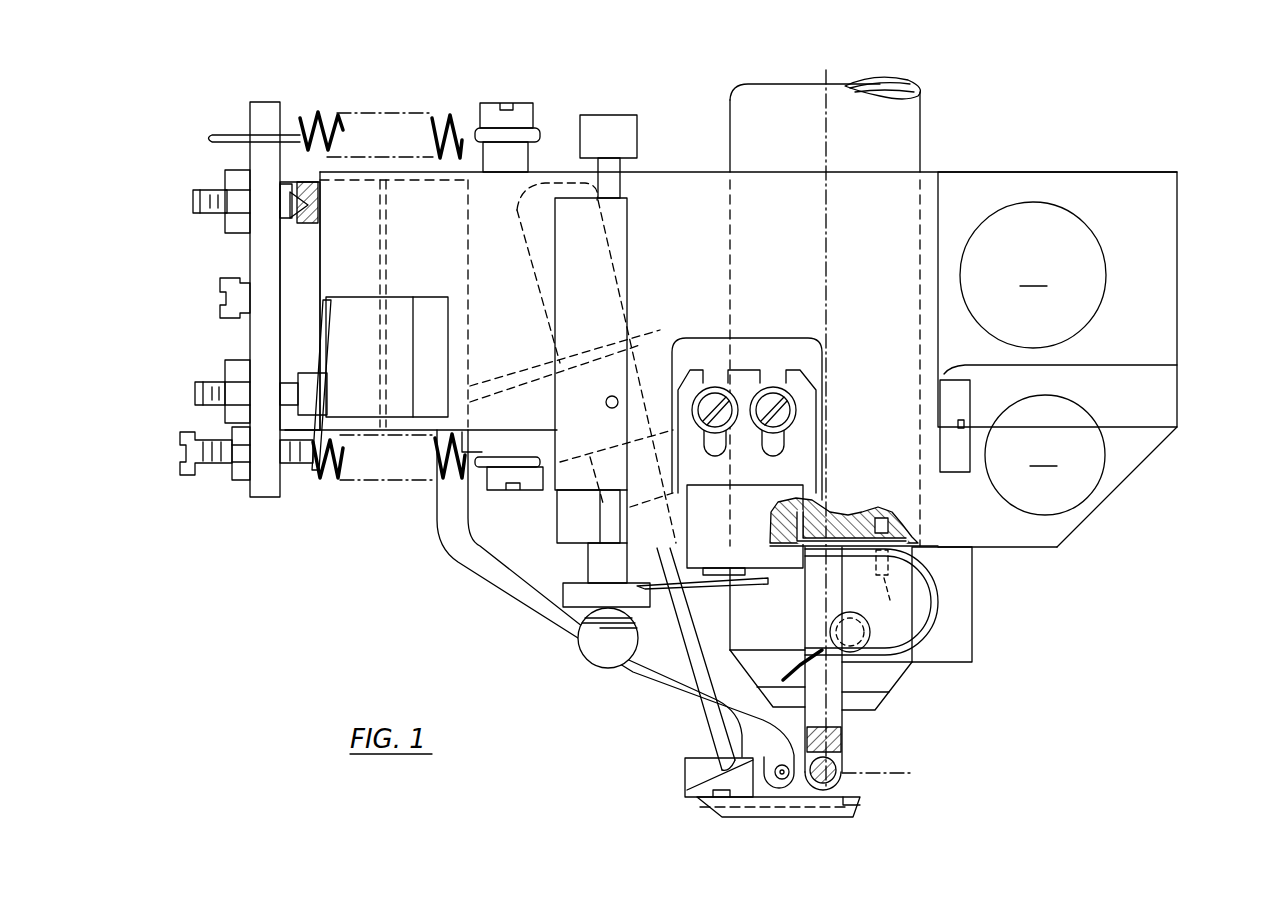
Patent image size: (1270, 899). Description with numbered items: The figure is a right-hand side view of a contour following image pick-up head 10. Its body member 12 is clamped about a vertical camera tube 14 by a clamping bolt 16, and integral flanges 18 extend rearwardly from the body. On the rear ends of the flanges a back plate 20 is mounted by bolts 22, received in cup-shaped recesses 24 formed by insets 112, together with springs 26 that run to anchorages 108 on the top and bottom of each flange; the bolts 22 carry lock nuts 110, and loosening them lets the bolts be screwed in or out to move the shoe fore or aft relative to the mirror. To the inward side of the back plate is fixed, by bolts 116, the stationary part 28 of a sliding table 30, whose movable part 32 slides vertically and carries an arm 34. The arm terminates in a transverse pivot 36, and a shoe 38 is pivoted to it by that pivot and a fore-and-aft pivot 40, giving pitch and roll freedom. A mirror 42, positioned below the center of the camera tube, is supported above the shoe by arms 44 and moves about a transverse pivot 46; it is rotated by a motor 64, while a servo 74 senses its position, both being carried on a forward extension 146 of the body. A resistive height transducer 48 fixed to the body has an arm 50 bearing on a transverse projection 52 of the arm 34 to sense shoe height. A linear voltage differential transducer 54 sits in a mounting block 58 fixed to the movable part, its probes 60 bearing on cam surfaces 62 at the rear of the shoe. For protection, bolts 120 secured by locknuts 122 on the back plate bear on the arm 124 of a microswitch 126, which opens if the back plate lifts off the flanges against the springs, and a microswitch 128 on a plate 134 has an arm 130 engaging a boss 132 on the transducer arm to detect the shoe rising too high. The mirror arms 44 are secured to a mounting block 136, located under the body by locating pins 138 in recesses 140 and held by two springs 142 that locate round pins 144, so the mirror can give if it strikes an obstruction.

The head 10 is at (678, 140).
The body member 12 is at (695, 180).
The camera tube 14 is at (920, 132).
The clamping bolt 16 is at (955, 472).
The flanges 18 is at (535, 182).
The back plate 20 is at (262, 246).
The bolts 22 is at (193, 201).
The cup-shaped recesses 24 is at (312, 228).
The springs 26 is at (345, 130).
The stationary part 28 is at (290, 318).
The sliding table 30 is at (388, 172).
The movable part 32 is at (458, 205).
The arm 34 is at (458, 550).
The transverse pivot 36 is at (784, 780).
The shoe 38 is at (845, 812).
The fore-and-aft pivot 40 is at (772, 780).
The mirror 42 is at (840, 778).
The arms 44 is at (850, 718).
The transverse pivot 46 is at (845, 750).
The resistive height transducer 48 is at (560, 495).
The arm 50 is at (590, 565).
The transverse projection 52 is at (600, 648).
The linear voltage differential transducer 54 is at (632, 315).
The mounting block 58 is at (665, 345).
The probes 60 is at (705, 745).
The cam surfaces 62 is at (690, 778).
The motor 64 is at (1033, 275).
The servo 74 is at (1045, 455).
The anchorages 108 is at (512, 120).
The lock nuts 110 is at (232, 178).
The insets 112 is at (306, 158).
The bolts 116 is at (222, 285).
The bolts 120 is at (186, 436).
The locknuts 122 is at (238, 480).
The arm 124 is at (327, 352).
The microswitch 126 is at (350, 300).
The microswitch 128 is at (745, 508).
The arm 130 is at (706, 590).
The boss 132 is at (572, 598).
The plate 134 is at (810, 440).
The mounting block 136 is at (773, 400).
The locating pins 138 is at (888, 580).
The recesses 140 is at (873, 508).
The springs 142 is at (950, 588).
The pins 144 is at (850, 615).
The forward extension 146 is at (1177, 348).